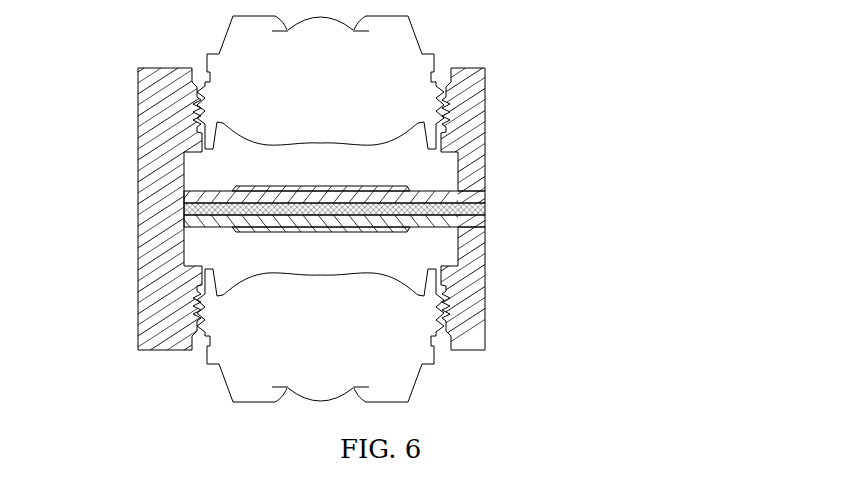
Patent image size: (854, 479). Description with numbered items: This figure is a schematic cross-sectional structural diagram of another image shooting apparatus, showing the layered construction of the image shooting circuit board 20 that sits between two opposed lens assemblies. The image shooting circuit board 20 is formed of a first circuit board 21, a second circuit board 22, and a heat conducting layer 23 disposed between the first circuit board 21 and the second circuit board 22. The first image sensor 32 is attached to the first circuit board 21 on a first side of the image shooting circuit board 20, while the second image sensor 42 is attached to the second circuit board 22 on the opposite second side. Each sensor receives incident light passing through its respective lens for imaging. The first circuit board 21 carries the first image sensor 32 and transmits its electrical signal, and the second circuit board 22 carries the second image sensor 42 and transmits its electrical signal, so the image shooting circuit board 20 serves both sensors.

The image shooting circuit board 20 is at (434, 203).
The first circuit board 21 is at (441, 191).
The second circuit board 22 is at (441, 227).
The heat conducting layer 23 is at (485, 203).
The first image sensor 32 is at (257, 184).
The second image sensor 42 is at (257, 234).